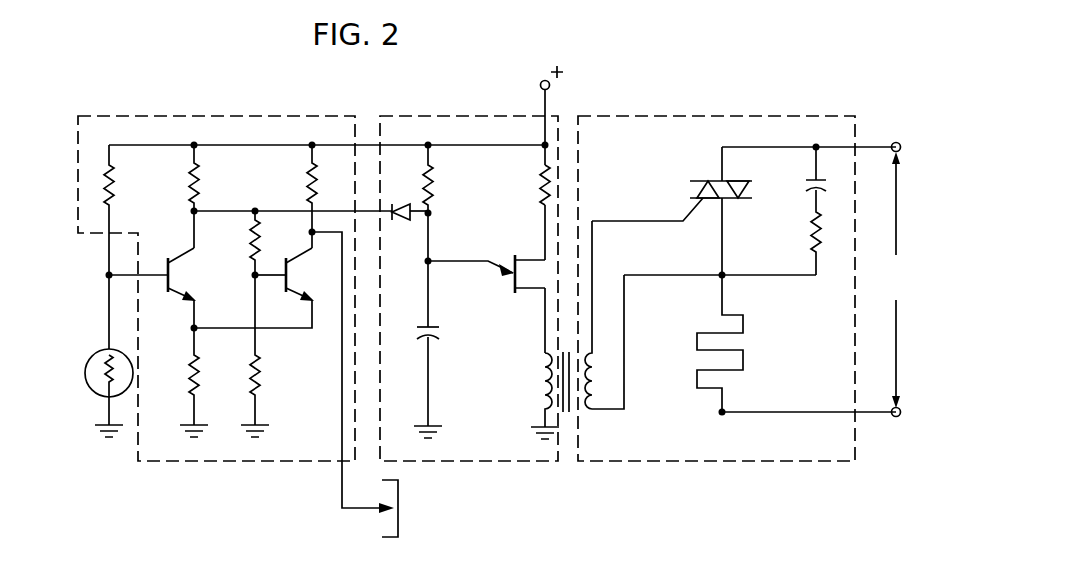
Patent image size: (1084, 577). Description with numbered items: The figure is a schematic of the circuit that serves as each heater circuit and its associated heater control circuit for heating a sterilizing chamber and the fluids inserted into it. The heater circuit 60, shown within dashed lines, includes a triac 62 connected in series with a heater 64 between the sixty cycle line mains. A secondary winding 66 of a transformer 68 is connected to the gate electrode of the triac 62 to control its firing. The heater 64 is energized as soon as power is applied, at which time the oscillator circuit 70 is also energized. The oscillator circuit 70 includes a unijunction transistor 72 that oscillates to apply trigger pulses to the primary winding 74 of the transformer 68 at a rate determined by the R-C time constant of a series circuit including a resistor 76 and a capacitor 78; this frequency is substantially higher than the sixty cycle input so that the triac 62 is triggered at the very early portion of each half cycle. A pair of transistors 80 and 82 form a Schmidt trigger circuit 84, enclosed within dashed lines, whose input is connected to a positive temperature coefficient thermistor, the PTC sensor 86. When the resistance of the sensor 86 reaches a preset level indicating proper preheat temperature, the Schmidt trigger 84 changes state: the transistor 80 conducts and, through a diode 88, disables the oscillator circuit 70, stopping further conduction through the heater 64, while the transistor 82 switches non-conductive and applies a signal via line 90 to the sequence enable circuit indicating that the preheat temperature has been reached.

The heater circuit 60 is at (744, 112).
The triac 62 is at (733, 199).
The heater 64 is at (744, 361).
The secondary winding 66 is at (592, 377).
The transformer 68 is at (568, 412).
The oscillator circuit 70 is at (489, 112).
The unijunction transistor 72 is at (505, 256).
The primary winding 74 is at (538, 381).
The resistor 76 is at (432, 195).
The capacitor 78 is at (437, 333).
The transistor 80 is at (170, 262).
The transistor 82 is at (288, 262).
The Schmidt trigger circuit 84 is at (269, 112).
The PTC sensor 86 is at (88, 362).
The diode 88 is at (400, 204).
The line 90 is at (353, 510).